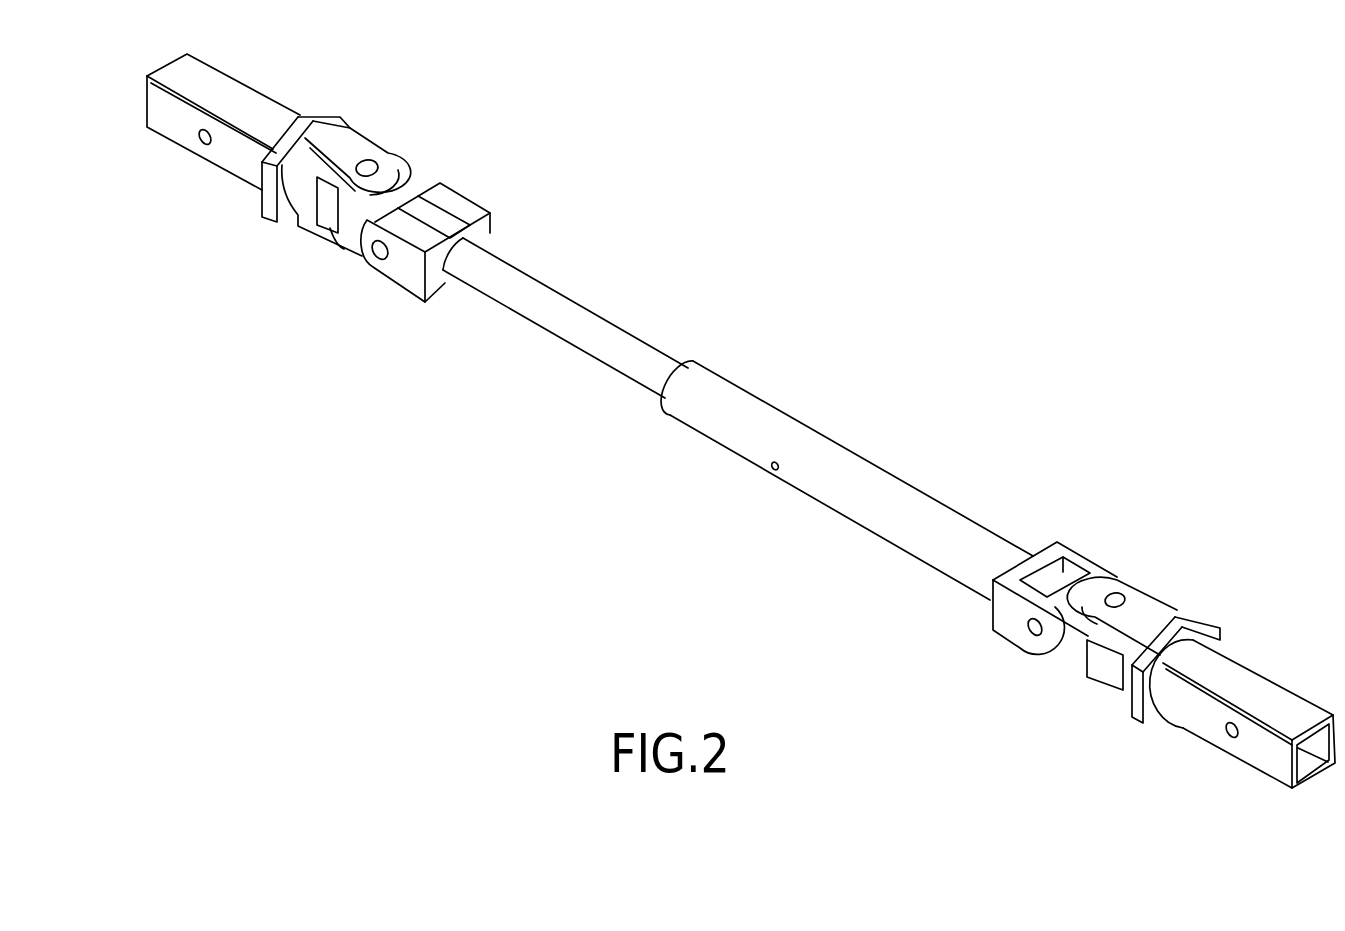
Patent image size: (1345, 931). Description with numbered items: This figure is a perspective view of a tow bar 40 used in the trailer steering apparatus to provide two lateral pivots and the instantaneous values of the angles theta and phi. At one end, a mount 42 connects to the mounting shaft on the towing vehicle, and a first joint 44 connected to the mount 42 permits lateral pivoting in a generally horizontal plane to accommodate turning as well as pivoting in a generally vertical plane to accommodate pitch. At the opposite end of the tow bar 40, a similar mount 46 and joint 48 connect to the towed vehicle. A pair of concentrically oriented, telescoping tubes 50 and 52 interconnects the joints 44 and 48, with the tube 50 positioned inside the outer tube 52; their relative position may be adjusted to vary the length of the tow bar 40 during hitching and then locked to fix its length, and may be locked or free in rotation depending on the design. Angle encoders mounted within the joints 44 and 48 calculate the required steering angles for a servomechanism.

The tow bar 40 is at (967, 203).
The mount 42 is at (1293, 704).
The first joint 44 is at (1160, 586).
The mount 46 is at (240, 103).
The joint 48 is at (403, 137).
The tube 50 is at (587, 358).
The outer tube 52 is at (842, 503).